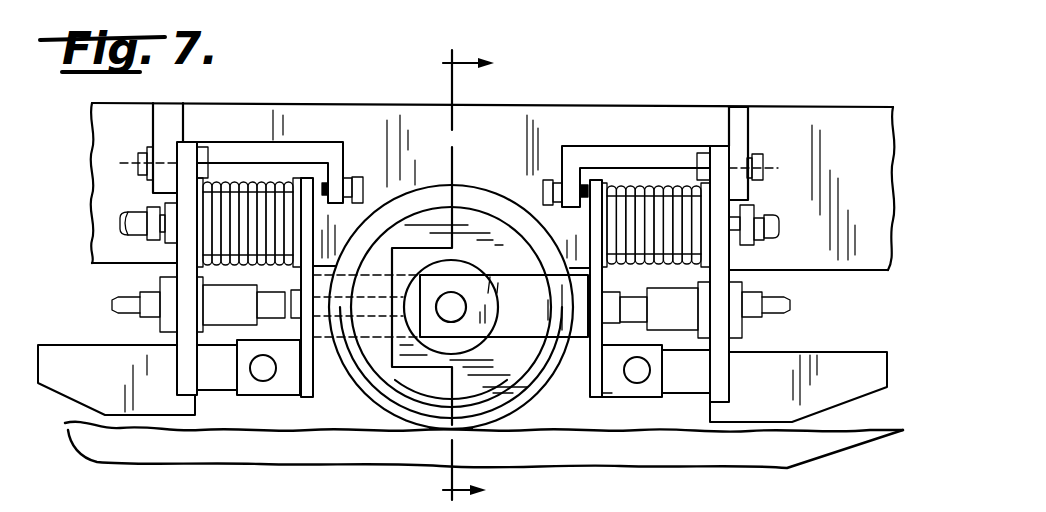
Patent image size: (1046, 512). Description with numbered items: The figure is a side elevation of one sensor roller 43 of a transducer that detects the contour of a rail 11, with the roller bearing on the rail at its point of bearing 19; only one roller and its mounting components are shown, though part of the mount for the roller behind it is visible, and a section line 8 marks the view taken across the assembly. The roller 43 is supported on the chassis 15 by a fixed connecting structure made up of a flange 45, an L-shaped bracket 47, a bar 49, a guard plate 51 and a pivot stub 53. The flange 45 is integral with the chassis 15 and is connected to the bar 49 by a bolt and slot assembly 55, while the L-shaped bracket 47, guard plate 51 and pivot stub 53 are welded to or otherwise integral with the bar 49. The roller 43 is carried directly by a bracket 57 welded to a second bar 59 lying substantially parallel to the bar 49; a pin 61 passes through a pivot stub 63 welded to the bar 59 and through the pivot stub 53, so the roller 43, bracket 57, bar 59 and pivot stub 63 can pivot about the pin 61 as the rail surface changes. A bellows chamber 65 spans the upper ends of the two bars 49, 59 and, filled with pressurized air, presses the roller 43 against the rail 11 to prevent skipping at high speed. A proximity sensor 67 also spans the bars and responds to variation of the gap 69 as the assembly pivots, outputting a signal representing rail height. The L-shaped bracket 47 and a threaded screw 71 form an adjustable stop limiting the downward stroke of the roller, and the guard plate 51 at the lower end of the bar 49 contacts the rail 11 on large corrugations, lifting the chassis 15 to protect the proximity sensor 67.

The section line 8- 8 is at (443, 277).
The rail 11 is at (862, 419).
The chassis 15 is at (850, 105).
The point of bearing 19 is at (447, 424).
The sensor roller 43 is at (482, 197).
The flange 45 is at (743, 106).
The L-shaped bracket 47 is at (625, 153).
The bar 49 is at (725, 192).
The guard plate 51 is at (833, 353).
The pivot stub 53 is at (677, 388).
The bolt and slot assembly 55 is at (764, 166).
The bracket 57 is at (545, 318).
The bar 59 is at (588, 372).
The pin 61 is at (642, 381).
The pivot stub 63 is at (628, 395).
The bellows chamber 65 is at (633, 191).
The proximity sensor 67 is at (688, 318).
The gap 69 is at (617, 293).
The threaded screw 71 is at (548, 178).